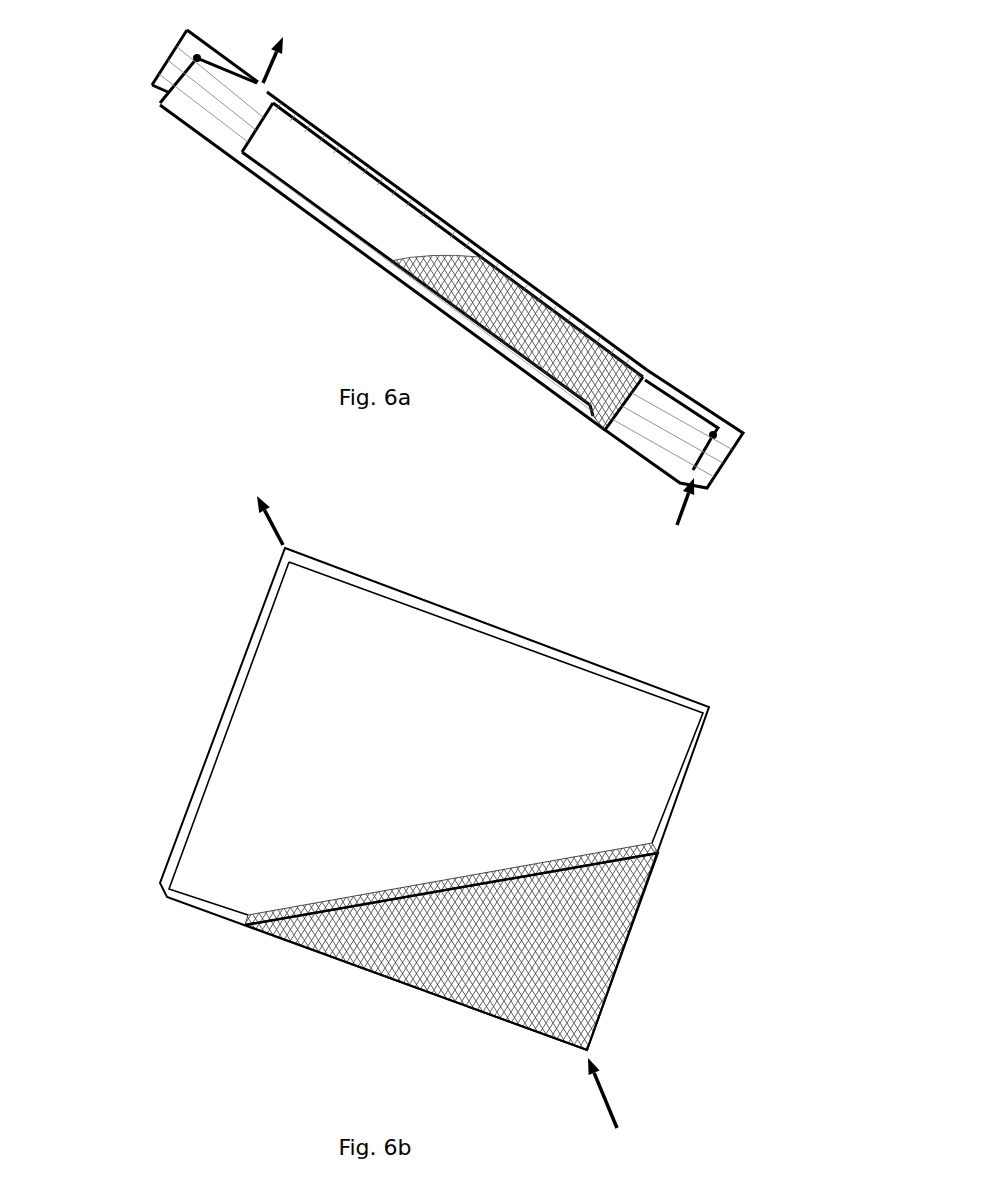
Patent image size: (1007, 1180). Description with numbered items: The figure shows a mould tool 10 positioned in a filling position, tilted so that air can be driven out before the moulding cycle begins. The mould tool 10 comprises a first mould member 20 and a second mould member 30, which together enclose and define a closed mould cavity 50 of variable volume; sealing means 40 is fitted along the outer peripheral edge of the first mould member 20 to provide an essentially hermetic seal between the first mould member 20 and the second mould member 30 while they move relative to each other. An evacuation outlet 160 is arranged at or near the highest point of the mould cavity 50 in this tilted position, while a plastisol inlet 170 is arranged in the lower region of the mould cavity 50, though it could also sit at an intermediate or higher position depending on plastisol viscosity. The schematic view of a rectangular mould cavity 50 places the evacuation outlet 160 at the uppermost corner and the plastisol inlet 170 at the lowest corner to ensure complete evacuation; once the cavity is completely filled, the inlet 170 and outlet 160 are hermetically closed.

In FIG. 6a, the mould tool 10 is at (104, 129).
In FIG. 6a, the first mould member 20 is at (263, 204).
In FIG. 6a, the second mould member 30 is at (446, 180).
In FIG. 6a, the sealing means 40 is at (767, 479).
In FIG. 6a, the mould cavity 50 is at (310, 157).
In FIG. 6b, the mould cavity 50 is at (401, 647).
In FIG. 6a, the evacuation outlet 160 is at (277, 82).
In FIG. 6b, the evacuation outlet 160 is at (296, 532).
In FIG. 6a, the plastisol inlet 170 is at (681, 477).
In FIG. 6b, the plastisol inlet 170 is at (622, 1043).